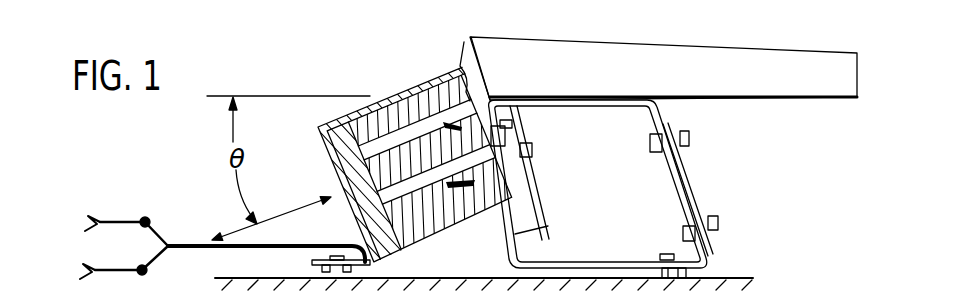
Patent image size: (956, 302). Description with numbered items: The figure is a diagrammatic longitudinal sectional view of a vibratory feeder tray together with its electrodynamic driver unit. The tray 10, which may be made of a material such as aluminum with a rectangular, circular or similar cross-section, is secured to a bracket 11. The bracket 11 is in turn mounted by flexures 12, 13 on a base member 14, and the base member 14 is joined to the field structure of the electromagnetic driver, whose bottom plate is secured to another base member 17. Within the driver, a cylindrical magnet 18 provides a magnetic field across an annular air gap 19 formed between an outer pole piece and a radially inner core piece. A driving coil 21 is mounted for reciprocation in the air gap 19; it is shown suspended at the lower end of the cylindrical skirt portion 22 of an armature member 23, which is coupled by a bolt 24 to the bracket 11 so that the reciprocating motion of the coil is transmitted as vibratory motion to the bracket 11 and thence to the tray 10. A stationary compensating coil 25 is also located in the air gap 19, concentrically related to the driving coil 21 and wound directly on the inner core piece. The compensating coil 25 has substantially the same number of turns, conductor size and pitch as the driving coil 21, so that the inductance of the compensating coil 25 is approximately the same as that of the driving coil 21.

The tray 10 is at (668, 46).
The bracket 11 is at (578, 108).
The flexure 12 is at (536, 196).
The flexure 13 is at (693, 172).
The base member 14 is at (610, 255).
The base member 17 is at (322, 262).
The cylindrical magnet 18 is at (378, 96).
The air gap 19 is at (463, 68).
The driving coil 21 is at (430, 122).
The cylindrical skirt portion 22 is at (468, 224).
The armature member 23 is at (515, 162).
The bolt 24 is at (514, 126).
The compensating coil 25 is at (452, 172).